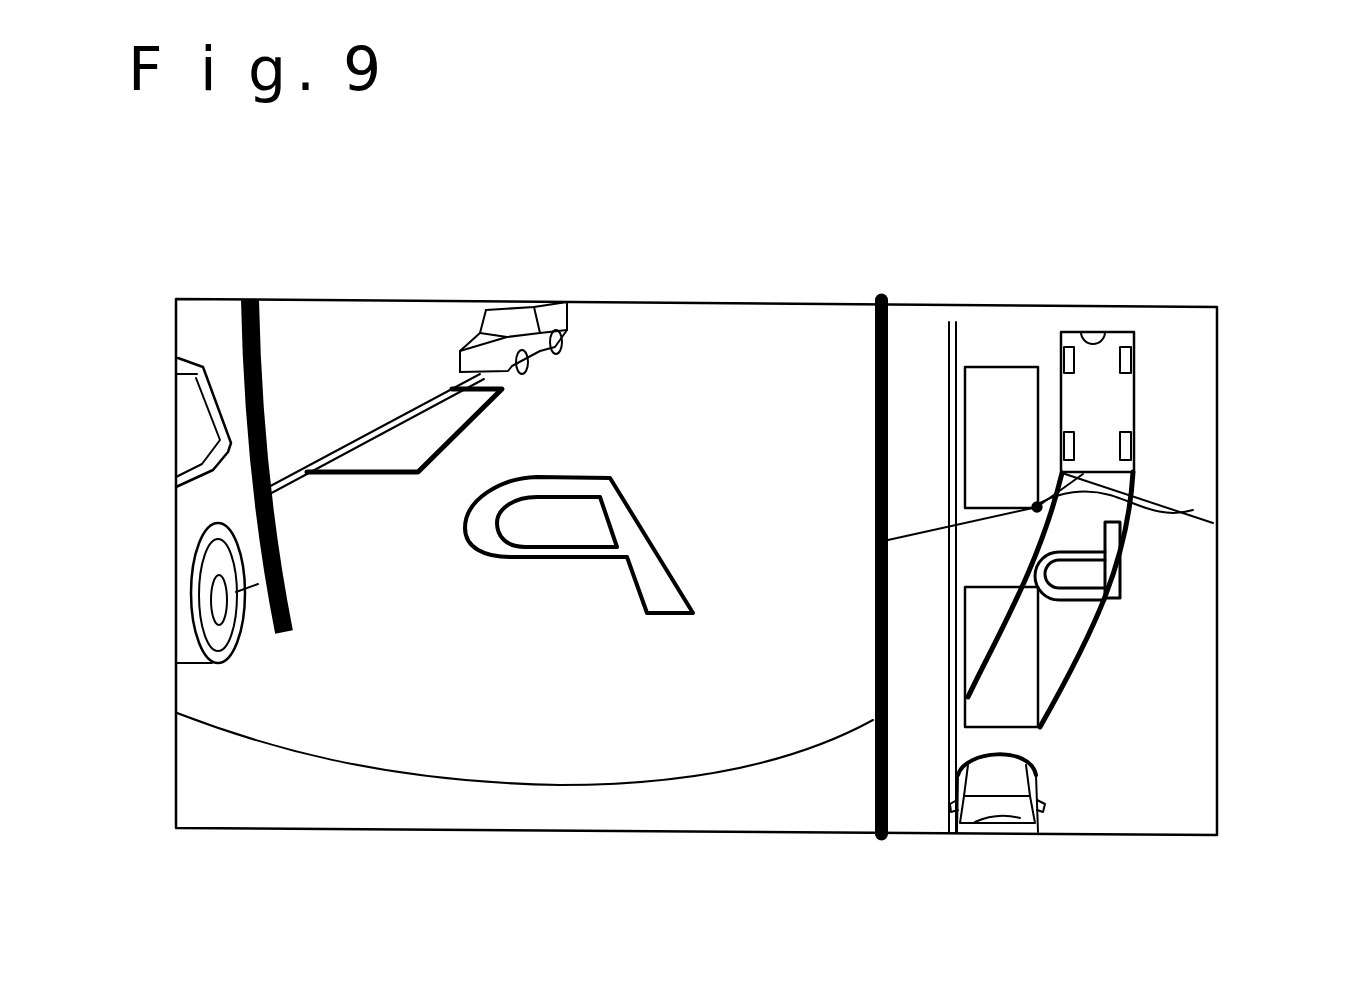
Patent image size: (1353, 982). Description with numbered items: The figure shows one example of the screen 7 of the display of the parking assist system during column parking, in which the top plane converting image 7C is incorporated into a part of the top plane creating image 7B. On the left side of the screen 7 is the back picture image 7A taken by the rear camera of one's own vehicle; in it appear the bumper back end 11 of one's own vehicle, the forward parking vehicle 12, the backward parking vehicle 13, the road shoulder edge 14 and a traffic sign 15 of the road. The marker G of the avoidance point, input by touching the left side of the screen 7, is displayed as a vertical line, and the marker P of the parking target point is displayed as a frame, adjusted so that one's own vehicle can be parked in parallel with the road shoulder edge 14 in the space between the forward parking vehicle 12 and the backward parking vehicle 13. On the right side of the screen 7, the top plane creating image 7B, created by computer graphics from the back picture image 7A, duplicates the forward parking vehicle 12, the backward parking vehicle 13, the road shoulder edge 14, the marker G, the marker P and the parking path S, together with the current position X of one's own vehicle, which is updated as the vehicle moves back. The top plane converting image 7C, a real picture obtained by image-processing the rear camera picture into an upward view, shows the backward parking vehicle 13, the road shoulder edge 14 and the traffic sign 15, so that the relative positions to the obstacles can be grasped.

The screen 7 is at (818, 298).
The back picture image 7A is at (217, 325).
The top plane creating image 7B is at (1207, 313).
The top plane converting image 7C is at (1187, 560).
The bumper back end 11 is at (827, 742).
The forward parking vehicle 12 is at (190, 505).
The backward parking vehicle 13 is at (550, 302).
The road shoulder edge 14 is at (323, 437).
The traffic sign 15 is at (623, 517).
The marker of the avoidance point G is at (267, 625).
The marker of the parking target point P is at (383, 473).
The parking path S is at (1083, 635).
The current position X is at (1110, 332).